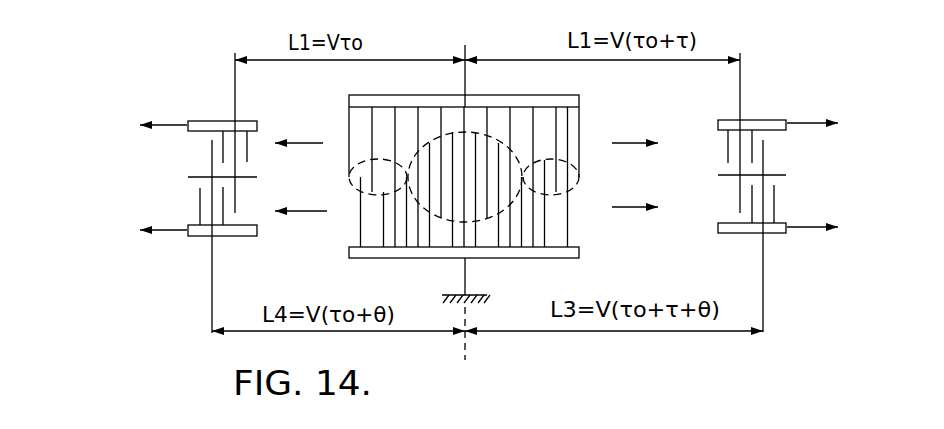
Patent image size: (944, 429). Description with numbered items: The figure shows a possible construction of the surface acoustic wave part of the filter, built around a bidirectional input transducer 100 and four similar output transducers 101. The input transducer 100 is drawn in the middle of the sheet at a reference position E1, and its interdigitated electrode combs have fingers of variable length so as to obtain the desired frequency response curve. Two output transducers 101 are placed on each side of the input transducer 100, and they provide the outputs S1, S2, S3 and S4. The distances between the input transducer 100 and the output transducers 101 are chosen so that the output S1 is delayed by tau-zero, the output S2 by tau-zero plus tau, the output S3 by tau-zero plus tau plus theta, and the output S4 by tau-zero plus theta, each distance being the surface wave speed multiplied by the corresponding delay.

The bidirectional input transducer 100 is at (579, 95).
The output transducer 101 is at (205, 118).
The reference position E1 is at (469, 62).
The output signal S1 is at (160, 110).
The output signal S2 is at (816, 108).
The output signal S3 is at (816, 212).
The output signal S4 is at (160, 214).